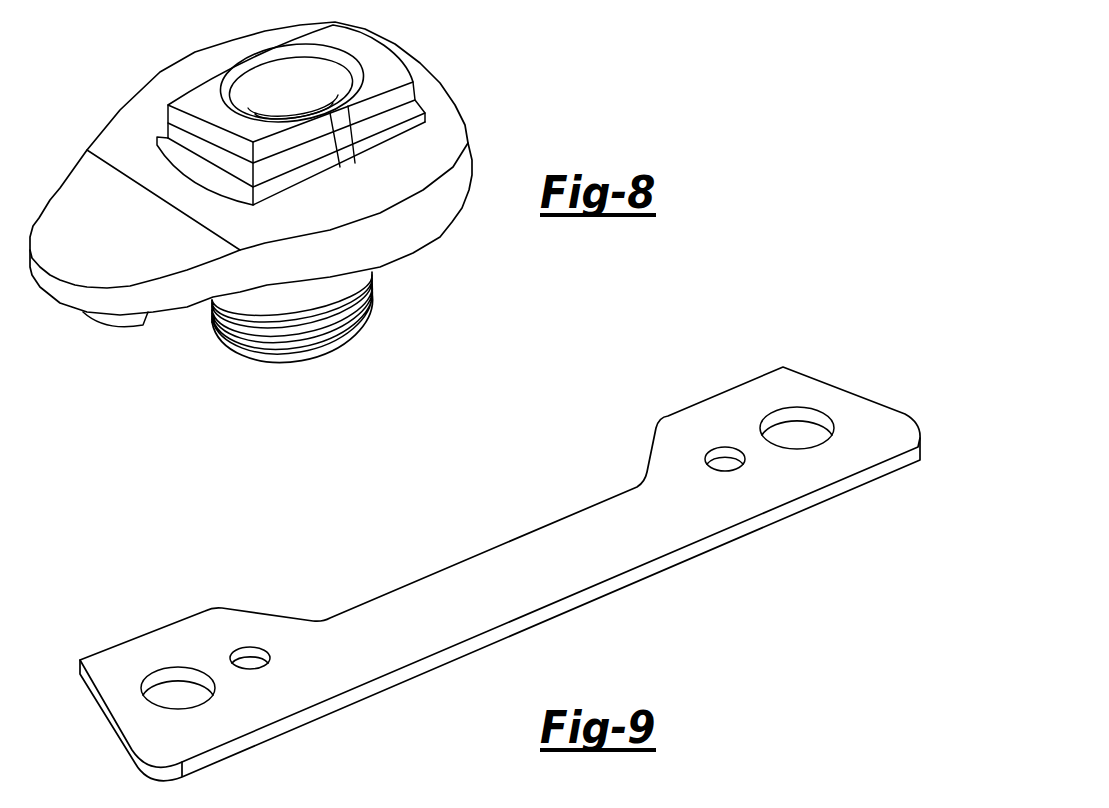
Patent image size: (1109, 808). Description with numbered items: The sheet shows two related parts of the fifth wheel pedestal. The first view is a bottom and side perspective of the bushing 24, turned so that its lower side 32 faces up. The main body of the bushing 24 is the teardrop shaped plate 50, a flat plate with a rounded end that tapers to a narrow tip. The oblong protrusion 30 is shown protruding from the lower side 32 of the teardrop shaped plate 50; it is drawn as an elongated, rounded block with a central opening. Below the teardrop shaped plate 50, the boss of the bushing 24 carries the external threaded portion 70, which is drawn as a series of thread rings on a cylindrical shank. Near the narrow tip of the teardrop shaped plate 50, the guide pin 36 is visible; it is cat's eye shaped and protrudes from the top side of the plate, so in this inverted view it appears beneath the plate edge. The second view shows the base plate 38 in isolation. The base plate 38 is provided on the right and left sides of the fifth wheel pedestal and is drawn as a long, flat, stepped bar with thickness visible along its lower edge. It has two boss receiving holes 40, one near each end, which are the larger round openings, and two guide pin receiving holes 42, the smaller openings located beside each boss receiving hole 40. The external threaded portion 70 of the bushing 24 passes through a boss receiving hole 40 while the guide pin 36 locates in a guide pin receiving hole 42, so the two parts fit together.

In FIG. 8, the bushing 24 is at (108, 105).
In FIG. 8, the oblong protrusion 30 is at (360, 50).
In FIG. 8, the lower side 32 is at (453, 123).
In FIG. 8, the guide pin 36 is at (125, 325).
In FIG. 8, the teardrop shaped plate 50 is at (430, 217).
In FIG. 8, the external threaded portion 70 is at (375, 293).
In FIG. 9, the base plate 38 is at (498, 567).
In FIG. 9, the boss receiving holes 40 is at (177, 677).
In FIG. 9, the guide pin receiving holes 42 is at (248, 655).